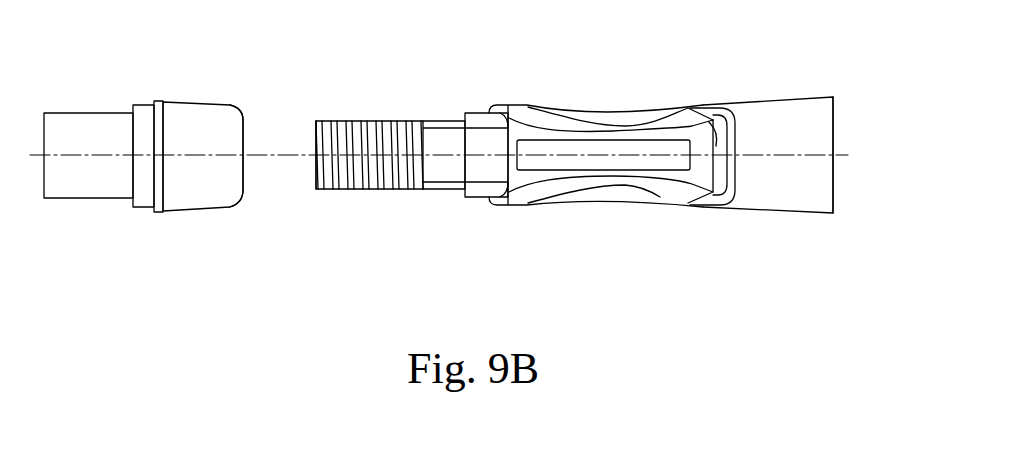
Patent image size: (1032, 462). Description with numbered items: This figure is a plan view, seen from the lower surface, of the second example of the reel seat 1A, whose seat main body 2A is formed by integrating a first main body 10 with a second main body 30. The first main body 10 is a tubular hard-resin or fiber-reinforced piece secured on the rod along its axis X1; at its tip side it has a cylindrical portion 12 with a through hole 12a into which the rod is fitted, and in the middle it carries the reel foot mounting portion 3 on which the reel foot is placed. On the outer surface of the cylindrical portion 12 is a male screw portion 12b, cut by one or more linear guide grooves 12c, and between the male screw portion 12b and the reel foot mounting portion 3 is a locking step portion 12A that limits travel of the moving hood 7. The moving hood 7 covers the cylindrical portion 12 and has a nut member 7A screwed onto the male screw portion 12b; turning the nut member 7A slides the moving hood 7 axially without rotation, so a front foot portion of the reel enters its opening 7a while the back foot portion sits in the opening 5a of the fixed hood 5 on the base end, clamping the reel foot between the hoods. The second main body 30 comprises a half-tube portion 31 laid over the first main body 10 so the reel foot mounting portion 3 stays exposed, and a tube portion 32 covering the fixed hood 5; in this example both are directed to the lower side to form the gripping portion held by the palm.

The reel seat 1A is at (682, 146).
The seat main body 2A is at (601, 166).
The reel foot mounting portion 3 is at (583, 145).
The fixed hood 5 is at (716, 156).
The opening 5a is at (717, 145).
The moving hood 7 is at (174, 115).
The nut member 7A is at (72, 130).
The opening 7a is at (243, 183).
The first main body 10 is at (405, 185).
The cylindrical portion 12 is at (435, 140).
The through hole 12a is at (314, 168).
The male screw portion 12b is at (369, 158).
The guide grooves 12c is at (330, 120).
The locking step portion 12A is at (482, 195).
The second main body 30 is at (750, 94).
The half-tube portion 31 is at (611, 110).
The tube portion 32 is at (815, 197).
The axis X1 is at (454, 155).